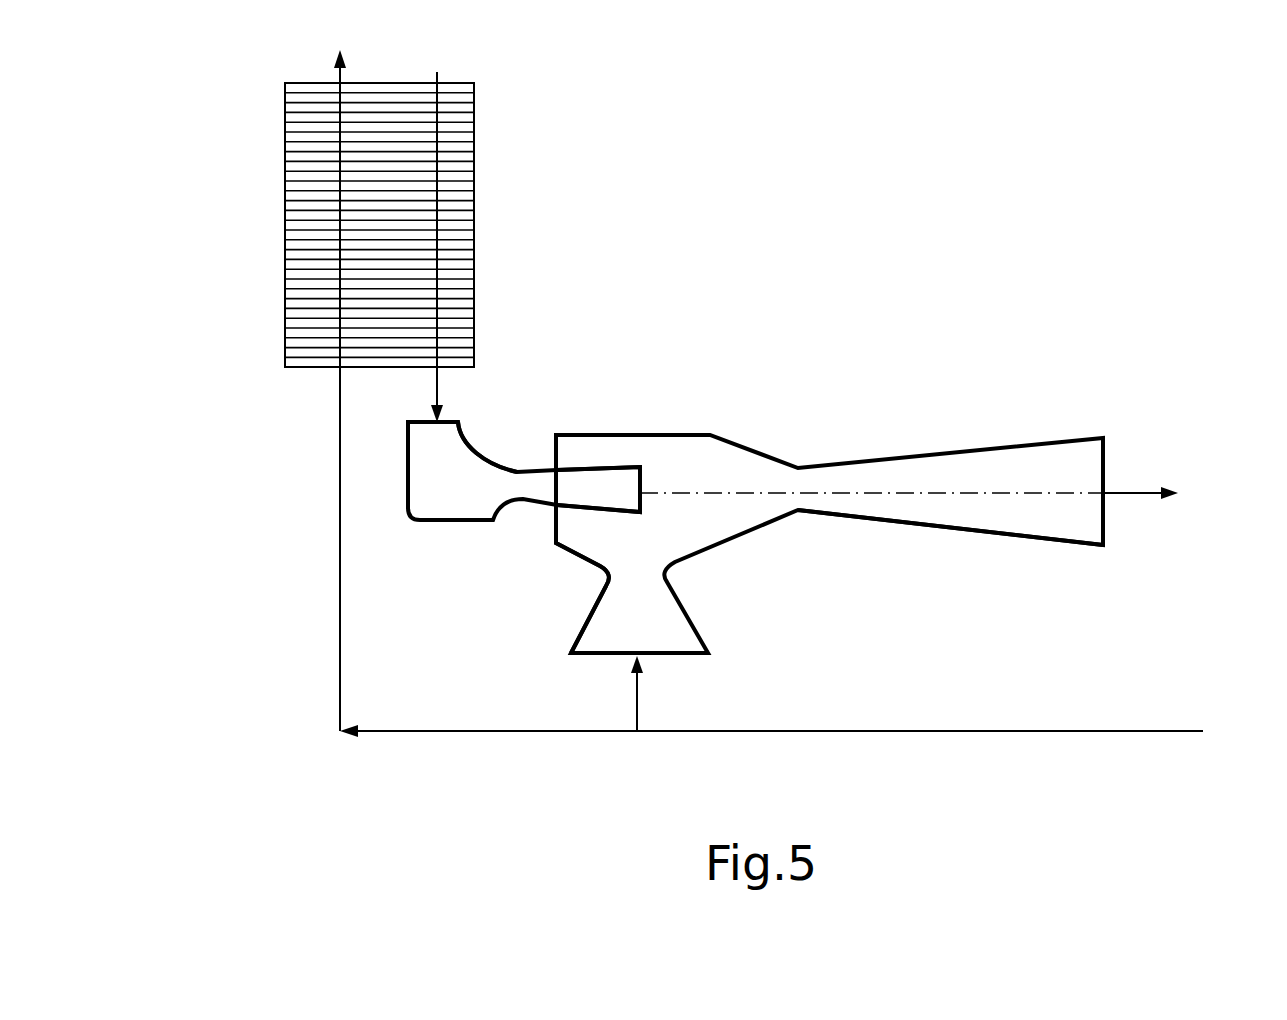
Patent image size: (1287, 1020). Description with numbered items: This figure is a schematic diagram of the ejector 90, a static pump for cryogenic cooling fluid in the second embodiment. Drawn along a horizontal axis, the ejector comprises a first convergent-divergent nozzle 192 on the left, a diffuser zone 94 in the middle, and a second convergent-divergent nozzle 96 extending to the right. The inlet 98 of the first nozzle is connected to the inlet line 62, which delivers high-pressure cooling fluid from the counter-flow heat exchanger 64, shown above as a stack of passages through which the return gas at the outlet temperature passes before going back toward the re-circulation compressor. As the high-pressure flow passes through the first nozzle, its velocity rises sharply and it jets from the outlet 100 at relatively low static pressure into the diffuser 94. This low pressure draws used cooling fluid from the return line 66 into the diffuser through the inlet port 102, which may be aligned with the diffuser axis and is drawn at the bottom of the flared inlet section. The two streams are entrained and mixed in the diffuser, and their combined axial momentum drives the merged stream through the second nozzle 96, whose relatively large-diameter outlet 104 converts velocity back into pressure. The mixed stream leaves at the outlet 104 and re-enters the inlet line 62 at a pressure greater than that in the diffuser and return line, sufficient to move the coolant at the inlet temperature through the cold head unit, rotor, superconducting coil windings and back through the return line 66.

The inlet line 62 is at (437, 152).
The counter-flow heat exchanger 64 is at (285, 263).
The return line 66 is at (338, 435).
The ejector 90 is at (816, 400).
The diffuser zone 94 is at (607, 545).
The second convergent-divergent nozzle 96 is at (833, 515).
The inlet 98 is at (452, 420).
The outlet 100 is at (628, 467).
The inlet port 102 is at (658, 655).
The outlet 104 is at (1105, 448).
The compressor 192 is at (430, 522).